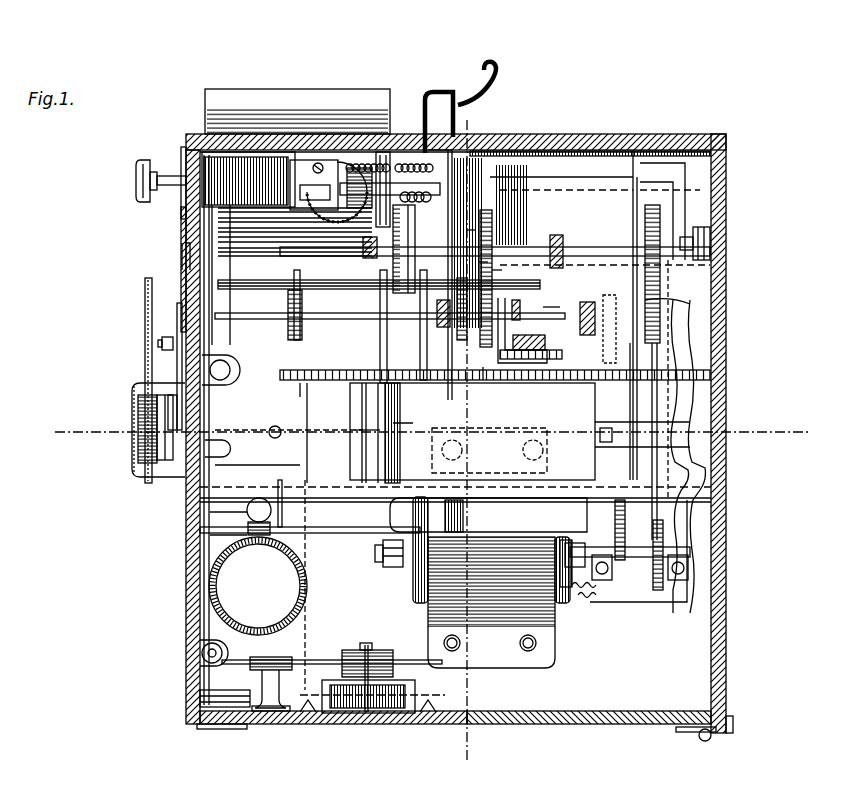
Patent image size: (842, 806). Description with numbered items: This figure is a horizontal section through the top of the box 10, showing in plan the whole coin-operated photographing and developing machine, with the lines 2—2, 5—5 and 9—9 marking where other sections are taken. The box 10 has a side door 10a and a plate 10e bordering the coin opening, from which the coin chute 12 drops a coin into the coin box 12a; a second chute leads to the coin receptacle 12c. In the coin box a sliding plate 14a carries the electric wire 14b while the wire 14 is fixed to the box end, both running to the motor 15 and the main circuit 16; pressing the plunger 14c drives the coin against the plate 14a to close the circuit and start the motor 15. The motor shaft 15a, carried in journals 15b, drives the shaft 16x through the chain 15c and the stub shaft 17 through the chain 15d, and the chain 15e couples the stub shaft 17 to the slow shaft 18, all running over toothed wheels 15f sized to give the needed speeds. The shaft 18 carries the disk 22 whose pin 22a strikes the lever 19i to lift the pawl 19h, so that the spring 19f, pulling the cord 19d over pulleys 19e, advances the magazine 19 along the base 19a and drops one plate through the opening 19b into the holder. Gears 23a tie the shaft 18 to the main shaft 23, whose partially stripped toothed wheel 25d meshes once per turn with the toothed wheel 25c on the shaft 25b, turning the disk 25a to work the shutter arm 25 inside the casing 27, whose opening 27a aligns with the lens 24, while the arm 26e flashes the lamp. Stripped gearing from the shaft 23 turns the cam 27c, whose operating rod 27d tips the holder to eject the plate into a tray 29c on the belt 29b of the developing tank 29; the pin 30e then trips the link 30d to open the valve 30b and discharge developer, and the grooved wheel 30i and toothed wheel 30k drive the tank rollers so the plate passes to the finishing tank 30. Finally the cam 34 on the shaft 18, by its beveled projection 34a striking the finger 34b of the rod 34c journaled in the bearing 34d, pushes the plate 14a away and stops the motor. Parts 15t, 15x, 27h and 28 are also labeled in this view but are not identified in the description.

The line 2— 2 is at (96, 428).
The line 5— 5 is at (478, 125).
The line 9— 9 is at (298, 690).
The box 10 is at (725, 616).
The side door 10a is at (239, 97).
The plate 10e is at (182, 157).
The coin chute 12 is at (230, 165).
The coin box 12a is at (360, 165).
The coin receptacle 12c is at (632, 207).
The electric wire 14 is at (405, 157).
The plate 14a is at (325, 172).
The electric wire 14b is at (300, 168).
The plunger 14c is at (140, 163).
The motor 15 is at (500, 637).
The motor shaft 15a is at (638, 560).
The journals 15b is at (677, 553).
The chain 15c is at (672, 400).
The chain 15d is at (600, 447).
The chain 15e is at (710, 305).
The toothed wheels 15f is at (664, 583).
The tie rod 15t is at (645, 320).
The hub 15x is at (660, 223).
The main circuit 16 is at (687, 207).
The shaft 16x is at (640, 307).
The stub shaft 17 is at (667, 340).
The shaft 18 is at (583, 258).
The magazine 19 is at (523, 367).
The base 19a is at (392, 408).
The opening 19b is at (393, 423).
The cord 19d is at (327, 378).
The pulleys 19e is at (272, 385).
The spring 19f is at (358, 700).
The pawl 19h is at (363, 387).
The lever 19i is at (336, 315).
The disk 22 is at (415, 232).
The pin 22a is at (362, 255).
The shaft 23 is at (528, 337).
The gears 23a is at (497, 272).
The lens 24 is at (167, 470).
The shutter arm 25 is at (180, 397).
The disk 25a is at (150, 285).
The shaft 25b is at (177, 330).
The toothed wheel 25c is at (240, 315).
The toothed wheel 25d is at (182, 270).
The lever 26e is at (163, 348).
The casing 27 is at (133, 475).
The opening 27a is at (135, 443).
The cam 27c is at (583, 329).
The operating rod 27d is at (483, 367).
The arm 27h is at (543, 307).
The lever 28 is at (482, 265).
The developing tank 29 is at (285, 540).
The continuous belt 29b is at (372, 540).
The trays 29c is at (372, 513).
The finishing tank 30 is at (275, 428).
The valve 30b is at (270, 523).
The operating link 30d is at (278, 468).
The pin 30e is at (222, 457).
The grooved wheel 30i is at (306, 382).
The toothed wheel 30k is at (489, 453).
The disk 34 is at (485, 245).
The beveled projection 34a is at (470, 230).
The finger 34b is at (452, 135).
The rod 34c is at (400, 160).
The bearing 34d is at (430, 150).